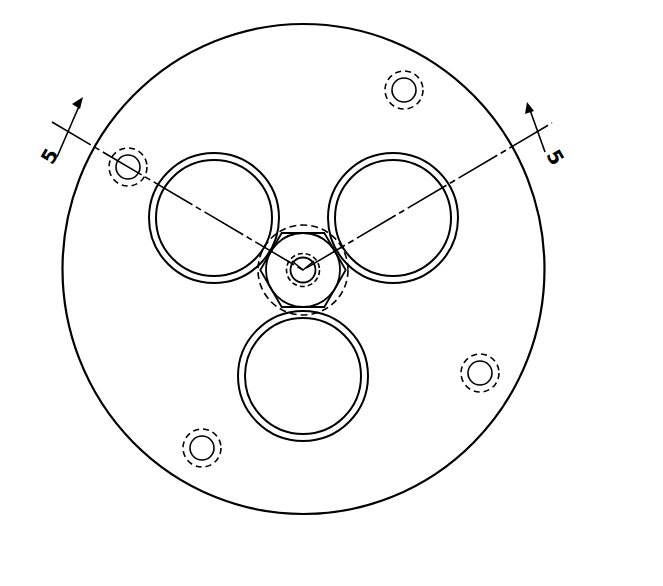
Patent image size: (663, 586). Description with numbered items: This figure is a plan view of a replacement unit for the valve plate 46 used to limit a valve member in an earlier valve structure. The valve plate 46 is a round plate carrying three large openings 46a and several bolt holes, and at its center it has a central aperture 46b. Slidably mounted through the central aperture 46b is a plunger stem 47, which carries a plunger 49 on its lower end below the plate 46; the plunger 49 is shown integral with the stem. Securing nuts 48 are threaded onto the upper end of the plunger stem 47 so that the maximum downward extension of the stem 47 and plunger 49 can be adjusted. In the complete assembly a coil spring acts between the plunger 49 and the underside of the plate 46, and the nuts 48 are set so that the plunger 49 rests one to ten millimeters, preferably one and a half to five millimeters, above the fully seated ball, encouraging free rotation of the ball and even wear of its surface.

The valve plate 46 is at (445, 426).
The ring openings 46a is at (422, 238).
The central aperture 46b is at (315, 270).
The plunger stem 47 is at (266, 292).
The securing nuts 48 is at (281, 283).
The plunger 49 is at (288, 288).